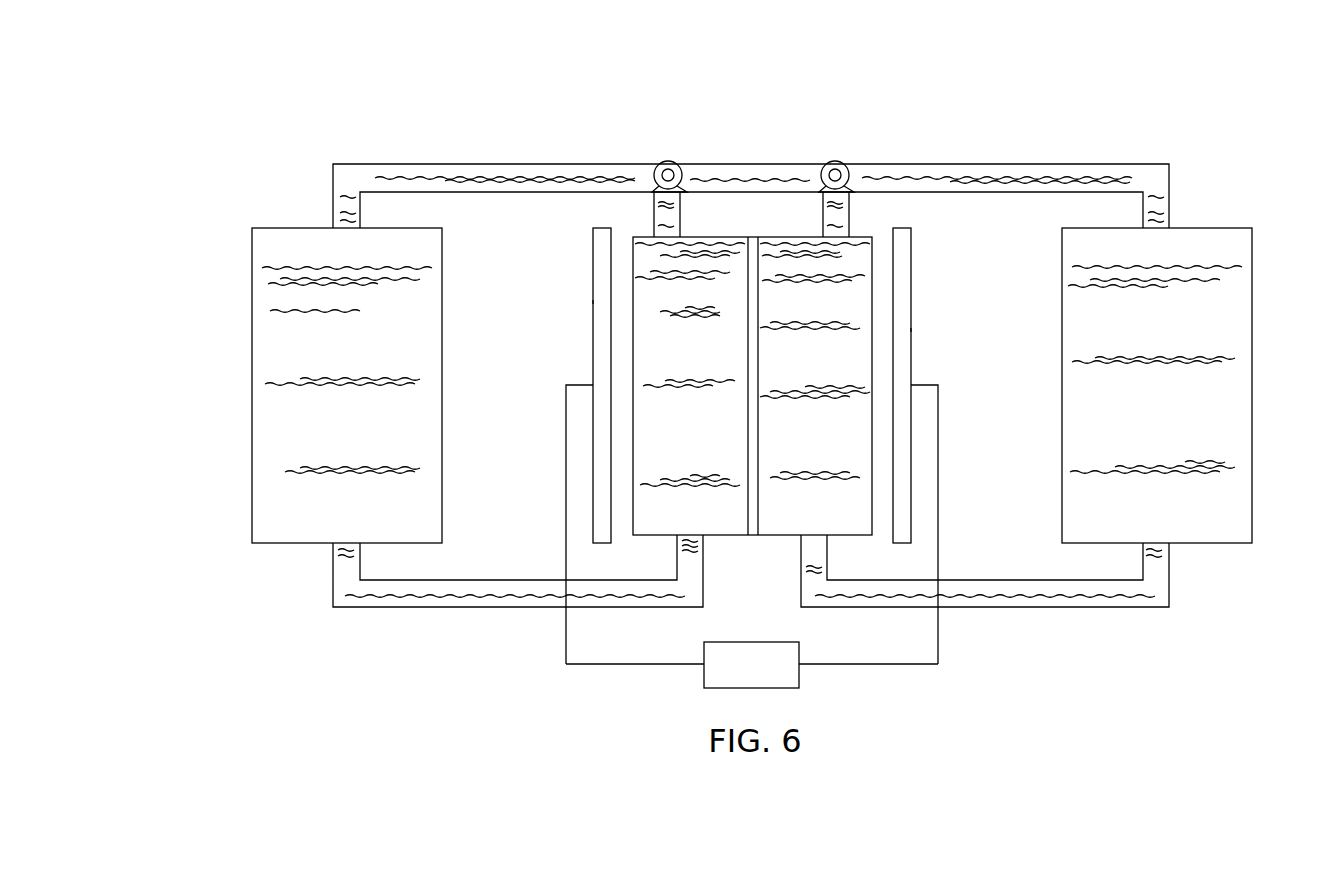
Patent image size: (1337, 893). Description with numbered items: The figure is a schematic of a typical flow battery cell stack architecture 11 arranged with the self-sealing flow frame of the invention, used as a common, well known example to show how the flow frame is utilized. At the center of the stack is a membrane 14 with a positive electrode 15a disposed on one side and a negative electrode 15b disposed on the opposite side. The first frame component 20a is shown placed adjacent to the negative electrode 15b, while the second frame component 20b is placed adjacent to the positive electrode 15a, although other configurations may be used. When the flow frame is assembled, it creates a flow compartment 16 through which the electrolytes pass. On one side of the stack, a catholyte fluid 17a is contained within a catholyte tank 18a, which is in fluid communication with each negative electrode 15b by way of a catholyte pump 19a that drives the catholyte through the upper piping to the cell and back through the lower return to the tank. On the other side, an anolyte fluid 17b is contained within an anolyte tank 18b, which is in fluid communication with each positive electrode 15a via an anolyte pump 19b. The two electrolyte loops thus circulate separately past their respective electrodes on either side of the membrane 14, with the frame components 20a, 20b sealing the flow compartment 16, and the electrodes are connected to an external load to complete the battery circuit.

The flow battery cell stack architecture 11 is at (1031, 124).
The membrane 14 is at (750, 237).
The positive electrode 15a is at (889, 257).
The negative electrode 15b is at (616, 253).
The flow compartment 16 is at (832, 545).
The catholyte fluid 17a is at (322, 364).
The anolyte fluid 17b is at (1135, 422).
The catholyte tank 18a is at (252, 307).
The anolyte tank 18b is at (1253, 329).
The catholyte pump 19a is at (660, 161).
The anolyte pump 19b is at (842, 161).
The first frame component 20a is at (593, 302).
The second frame component 20b is at (912, 330).